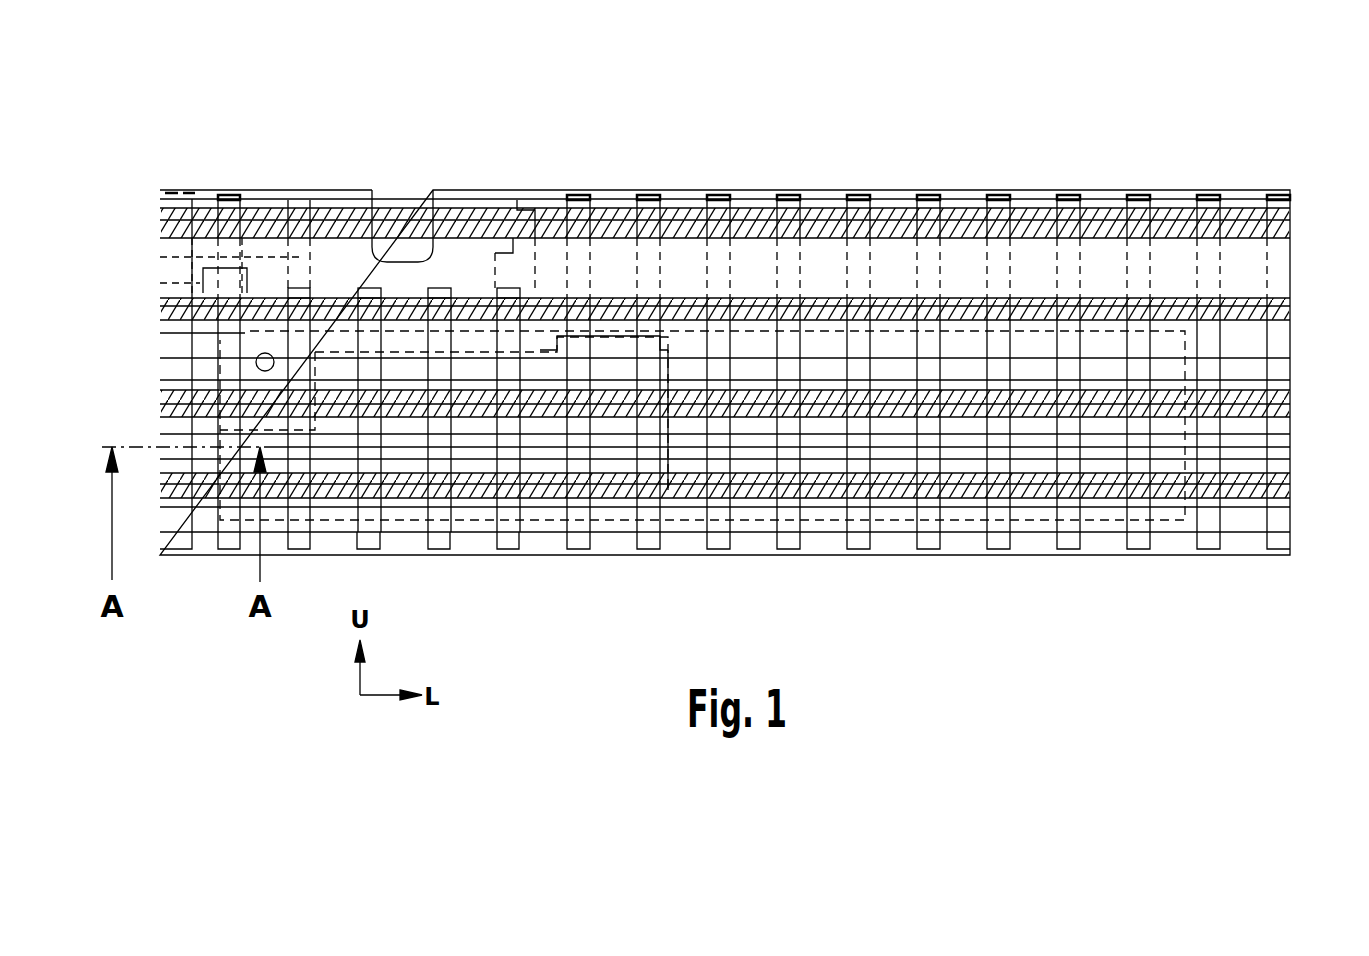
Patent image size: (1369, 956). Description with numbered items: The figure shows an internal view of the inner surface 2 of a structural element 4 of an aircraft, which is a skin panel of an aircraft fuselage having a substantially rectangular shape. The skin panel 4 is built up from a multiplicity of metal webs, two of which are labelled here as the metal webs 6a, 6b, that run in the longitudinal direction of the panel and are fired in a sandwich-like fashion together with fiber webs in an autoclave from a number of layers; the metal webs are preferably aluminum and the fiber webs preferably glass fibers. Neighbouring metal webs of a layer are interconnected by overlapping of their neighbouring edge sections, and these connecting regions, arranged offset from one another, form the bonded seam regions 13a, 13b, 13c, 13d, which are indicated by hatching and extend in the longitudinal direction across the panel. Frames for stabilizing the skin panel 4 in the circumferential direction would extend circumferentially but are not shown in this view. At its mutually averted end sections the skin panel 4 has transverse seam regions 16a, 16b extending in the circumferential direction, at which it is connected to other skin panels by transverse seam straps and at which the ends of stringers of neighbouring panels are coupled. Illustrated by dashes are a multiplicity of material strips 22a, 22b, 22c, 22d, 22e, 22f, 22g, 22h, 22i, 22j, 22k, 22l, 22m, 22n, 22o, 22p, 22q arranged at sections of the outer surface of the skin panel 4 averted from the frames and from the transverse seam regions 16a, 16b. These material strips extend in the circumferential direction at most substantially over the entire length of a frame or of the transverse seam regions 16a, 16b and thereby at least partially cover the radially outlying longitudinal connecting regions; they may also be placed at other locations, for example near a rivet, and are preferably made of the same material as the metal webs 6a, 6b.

The inner surface 2 is at (1253, 273).
The structural element 4 is at (130, 118).
The metal web 6a is at (1258, 450).
The metal web 6b is at (1252, 372).
The bonded seam region 13a is at (1290, 212).
The bonded seam region 13b is at (1290, 310).
The bonded seam region 13c is at (1290, 413).
The bonded seam region 13d is at (1290, 492).
The transverse seam region 16a is at (175, 542).
The transverse seam region 16b is at (1278, 542).
The material strip 22a is at (180, 270).
The material strip 22b is at (180, 285).
The material strip 22c is at (299, 286).
The material strip 22d is at (368, 286).
The material strip 22e is at (448, 286).
The material strip 22f is at (513, 286).
The material strip 22g is at (579, 192).
The material strip 22h is at (646, 192).
The material strip 22i is at (718, 192).
The material strip 22j is at (788, 192).
The material strip 22k is at (858, 192).
The material strip 22l is at (928, 192).
The material strip 22m is at (998, 192).
The material strip 22n is at (1068, 192).
The material strip 22o is at (1138, 192).
The material strip 22p is at (1209, 192).
The material strip 22q is at (1281, 192).